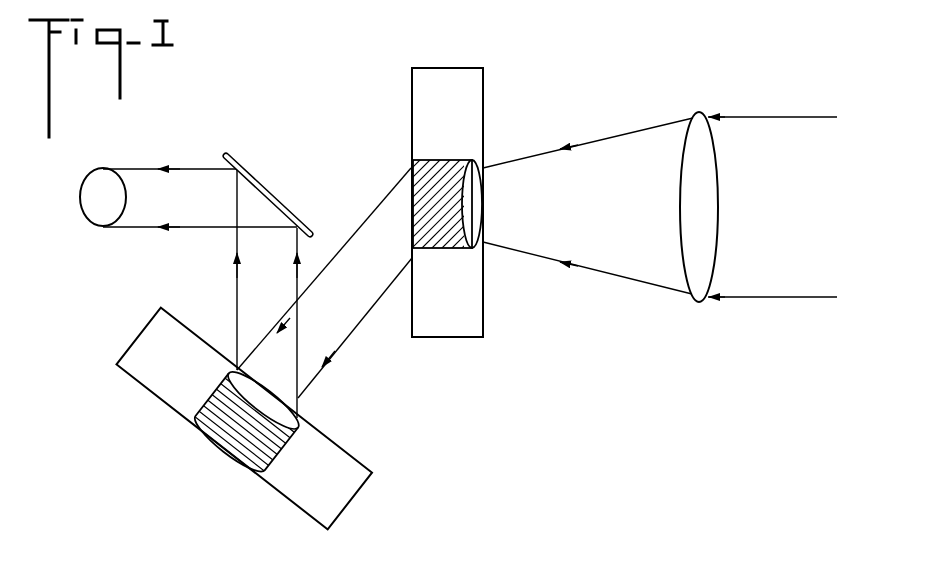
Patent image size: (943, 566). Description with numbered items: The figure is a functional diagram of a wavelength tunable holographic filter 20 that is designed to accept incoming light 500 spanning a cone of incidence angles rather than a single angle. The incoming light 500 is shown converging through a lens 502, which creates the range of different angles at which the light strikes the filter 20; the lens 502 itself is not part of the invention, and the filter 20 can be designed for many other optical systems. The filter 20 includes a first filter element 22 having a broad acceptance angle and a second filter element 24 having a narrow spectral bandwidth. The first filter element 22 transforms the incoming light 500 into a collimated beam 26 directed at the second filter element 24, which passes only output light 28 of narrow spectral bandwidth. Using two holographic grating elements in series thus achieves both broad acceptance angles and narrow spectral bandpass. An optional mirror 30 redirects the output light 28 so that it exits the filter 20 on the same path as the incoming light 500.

The wavelength tunable holographic filter 20 is at (264, 82).
The first filter element 22 is at (410, 148).
The second filter element 24 is at (273, 487).
The collimated beam 26 is at (337, 318).
The output light 28 is at (173, 193).
The mirror 30 is at (265, 182).
The incoming light 500 is at (597, 168).
The lens 502 is at (707, 232).